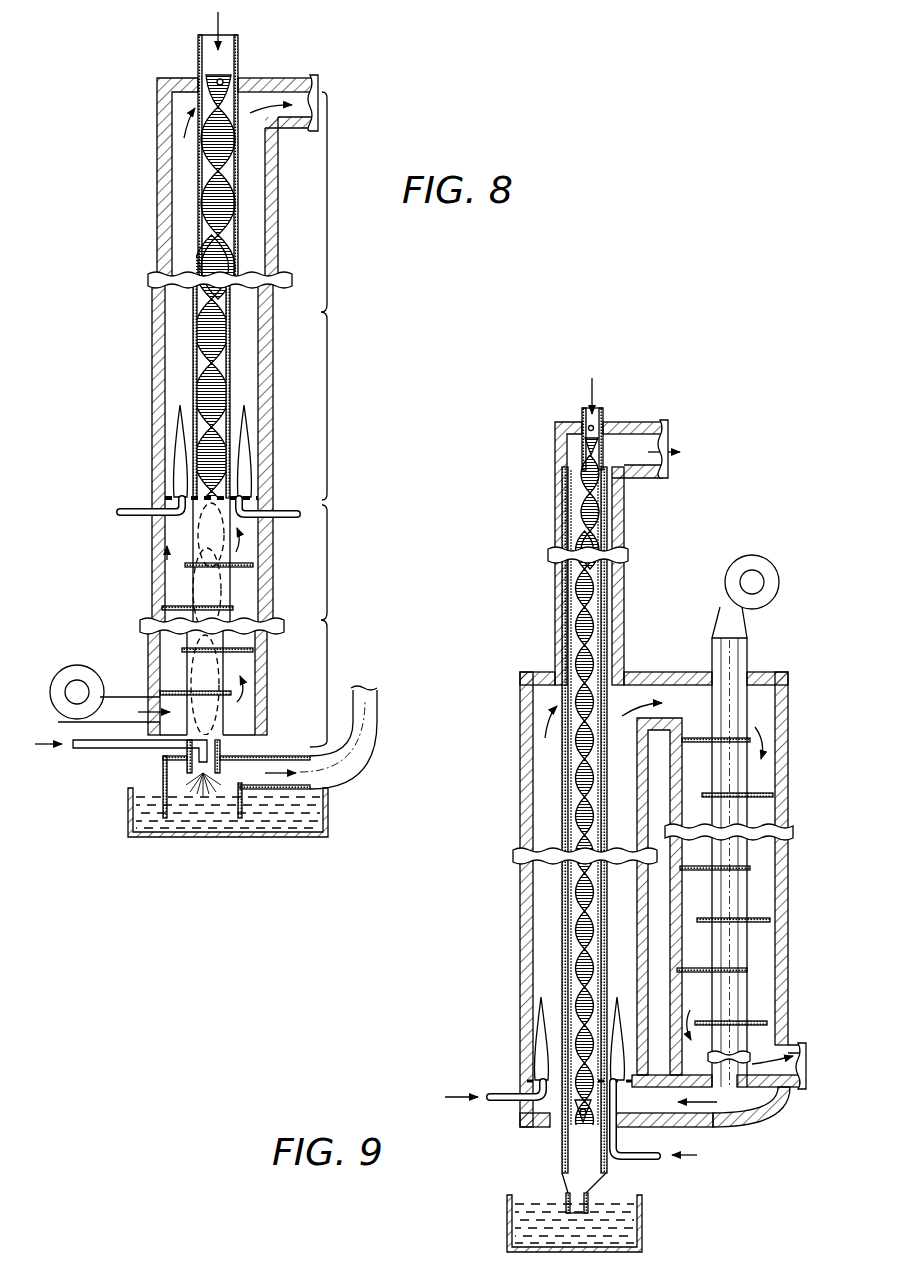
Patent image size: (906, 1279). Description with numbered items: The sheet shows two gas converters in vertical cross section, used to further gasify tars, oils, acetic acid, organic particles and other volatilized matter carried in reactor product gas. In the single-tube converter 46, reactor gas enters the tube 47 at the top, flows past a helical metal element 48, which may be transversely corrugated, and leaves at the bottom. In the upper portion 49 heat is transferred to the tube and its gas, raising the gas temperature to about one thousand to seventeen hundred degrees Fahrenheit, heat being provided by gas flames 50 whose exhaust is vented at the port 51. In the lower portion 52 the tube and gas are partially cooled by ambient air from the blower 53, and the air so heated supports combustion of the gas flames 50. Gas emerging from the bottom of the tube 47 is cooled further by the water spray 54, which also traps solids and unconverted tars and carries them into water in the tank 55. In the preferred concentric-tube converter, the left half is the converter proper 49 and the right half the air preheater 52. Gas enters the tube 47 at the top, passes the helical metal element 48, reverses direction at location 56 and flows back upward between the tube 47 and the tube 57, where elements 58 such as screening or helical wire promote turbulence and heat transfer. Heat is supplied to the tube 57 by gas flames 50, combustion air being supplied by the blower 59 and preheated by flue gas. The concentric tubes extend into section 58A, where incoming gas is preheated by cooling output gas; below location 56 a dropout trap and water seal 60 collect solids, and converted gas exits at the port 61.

In FIG. 8, the converter 46 is at (150, 383).
In FIG. 8, the tube 47 is at (240, 52).
In FIG. 9, the tube 47 is at (605, 413).
In FIG. 8, the helical metal element 48 is at (207, 205).
In FIG. 9, the helical metal element 48 is at (586, 462).
In FIG. 8, the upper portion 49 is at (351, 296).
In FIG. 9, the upper portion 49 is at (562, 787).
In FIG. 8, the gas flames 50 is at (177, 455).
In FIG. 9, the gas flames 50 is at (540, 1043).
In FIG. 8, the port 51 is at (310, 103).
In FIG. 8, the lower portion 52 is at (267, 622).
In FIG. 9, the lower portion 52 is at (780, 803).
In FIG. 8, the blower 53 is at (68, 667).
In FIG. 8, the water spray 54 is at (180, 780).
In FIG. 8, the tank 55 is at (130, 820).
In FIG. 9, the reversal location 56 is at (557, 1145).
In FIG. 9, the tube 57 is at (567, 590).
In FIG. 9, the elements 58 is at (566, 518).
In FIG. 9, the section 58A is at (625, 583).
In FIG. 9, the blower 59 is at (767, 560).
In FIG. 9, the water seal 60 is at (507, 1228).
In FIG. 9, the port 61 is at (660, 442).